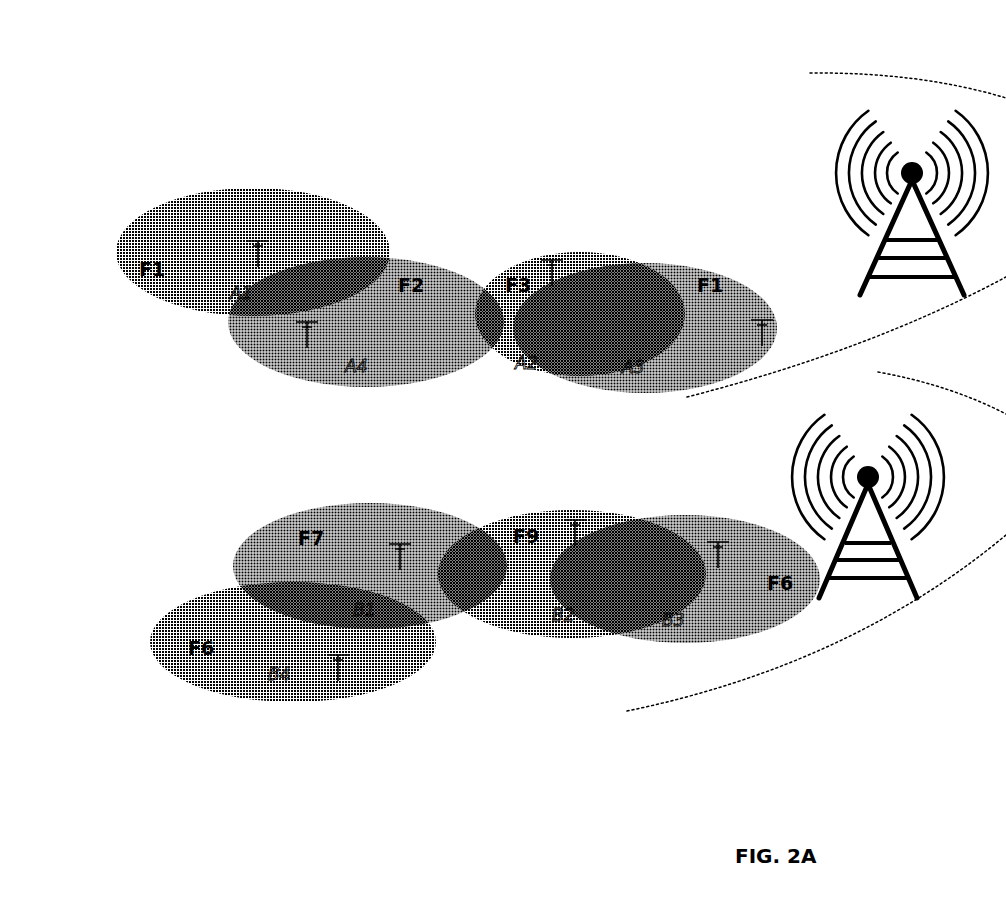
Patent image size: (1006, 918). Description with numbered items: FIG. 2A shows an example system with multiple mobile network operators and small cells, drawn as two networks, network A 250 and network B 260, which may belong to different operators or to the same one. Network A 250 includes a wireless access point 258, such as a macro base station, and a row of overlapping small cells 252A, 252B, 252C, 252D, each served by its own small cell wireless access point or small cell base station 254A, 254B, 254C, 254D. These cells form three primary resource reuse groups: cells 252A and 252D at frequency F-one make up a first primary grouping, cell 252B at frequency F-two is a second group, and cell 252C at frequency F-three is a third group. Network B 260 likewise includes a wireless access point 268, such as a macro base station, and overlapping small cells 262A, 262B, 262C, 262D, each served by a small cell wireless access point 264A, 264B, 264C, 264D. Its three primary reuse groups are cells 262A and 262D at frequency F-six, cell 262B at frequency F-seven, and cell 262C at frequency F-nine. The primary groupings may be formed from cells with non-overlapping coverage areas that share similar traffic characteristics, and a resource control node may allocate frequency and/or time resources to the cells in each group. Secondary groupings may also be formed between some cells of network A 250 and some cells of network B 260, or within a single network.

The network A 250 is at (910, 78).
The cell 252A is at (343, 183).
The cell 252B is at (400, 270).
The cell 252C is at (543, 249).
The cell 252D is at (667, 270).
The small cell wireless access point 254A is at (263, 258).
The small cell wireless access point 254B is at (310, 335).
The small cell wireless access point 254C is at (555, 273).
The small cell wireless access point 254D is at (765, 336).
The wireless access point 258 is at (942, 268).
The network B 260 is at (945, 393).
The cell 262A is at (203, 580).
The cell 262B is at (367, 515).
The cell 262C is at (556, 508).
The cell 262D is at (708, 641).
The small cell wireless access point 264A is at (345, 673).
The small cell wireless access point 264B is at (403, 558).
The small cell wireless access point 264C is at (582, 535).
The small cell wireless access point 264D is at (725, 558).
The wireless access point 268 is at (912, 568).